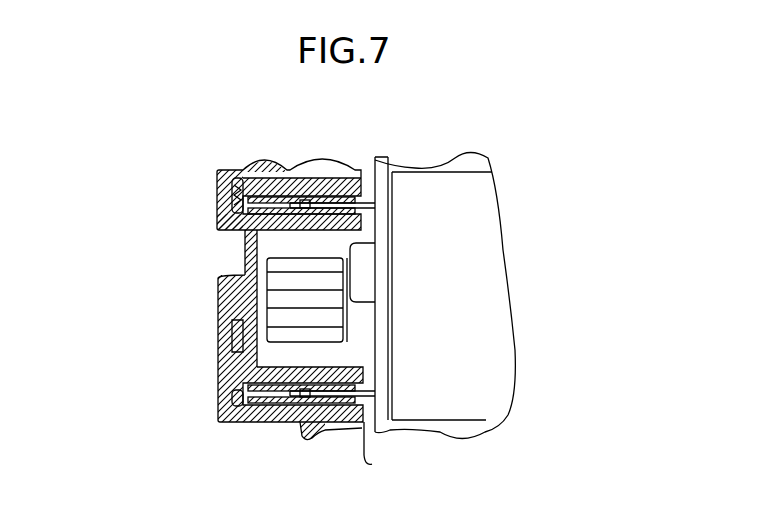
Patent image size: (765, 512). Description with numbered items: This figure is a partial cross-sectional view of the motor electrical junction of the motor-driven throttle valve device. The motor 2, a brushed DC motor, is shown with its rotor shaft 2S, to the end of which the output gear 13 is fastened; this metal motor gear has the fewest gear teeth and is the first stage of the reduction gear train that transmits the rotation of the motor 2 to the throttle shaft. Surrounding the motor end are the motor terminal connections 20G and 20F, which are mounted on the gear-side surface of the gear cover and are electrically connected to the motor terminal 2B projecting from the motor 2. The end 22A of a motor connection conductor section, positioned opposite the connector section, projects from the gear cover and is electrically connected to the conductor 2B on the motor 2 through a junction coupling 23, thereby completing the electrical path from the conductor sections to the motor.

The motor 2 is at (457, 197).
The motor terminal 2B is at (362, 170).
The rotor shaft 2S is at (352, 308).
The output gear 13 is at (282, 285).
The motor terminal connection 20G is at (277, 230).
The motor terminal connection 20F is at (290, 415).
The end of the motor connection conductor section 22A is at (240, 176).
The junction coupling 23 is at (300, 170).